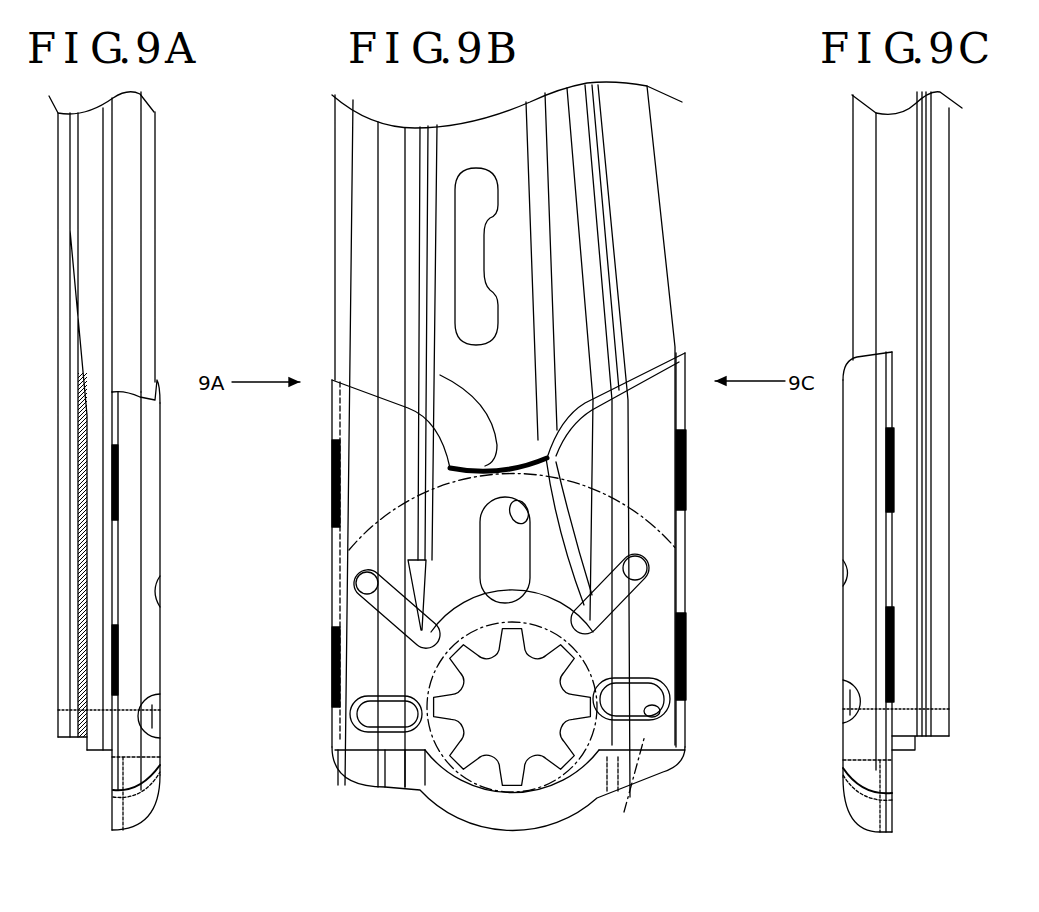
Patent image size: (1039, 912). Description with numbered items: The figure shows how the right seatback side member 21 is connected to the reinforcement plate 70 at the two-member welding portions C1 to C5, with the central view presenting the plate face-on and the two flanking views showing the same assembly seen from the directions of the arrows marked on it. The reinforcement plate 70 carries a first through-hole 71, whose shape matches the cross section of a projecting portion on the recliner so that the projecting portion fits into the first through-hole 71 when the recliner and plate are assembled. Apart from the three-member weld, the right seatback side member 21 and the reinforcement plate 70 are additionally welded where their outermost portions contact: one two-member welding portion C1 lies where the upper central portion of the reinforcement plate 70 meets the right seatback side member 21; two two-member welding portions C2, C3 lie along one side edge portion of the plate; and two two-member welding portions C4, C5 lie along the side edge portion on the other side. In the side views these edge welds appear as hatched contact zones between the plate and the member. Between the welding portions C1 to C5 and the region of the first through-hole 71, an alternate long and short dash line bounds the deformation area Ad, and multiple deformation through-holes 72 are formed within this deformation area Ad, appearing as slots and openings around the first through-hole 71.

In FIG. 9A, the right seatback side member 21 is at (148, 201).
In FIG. 9B, the right seatback side member 21 is at (665, 201).
In FIG. 9C, the right seatback side member 21 is at (945, 201).
In FIG. 9A, the reinforcement plate 70 is at (160, 557).
In FIG. 9B, the reinforcement plate 70 is at (668, 402).
In FIG. 9C, the reinforcement plate 70 is at (843, 542).
In FIG. 9B, the first through-hole 71 is at (462, 720).
In FIG. 9B, the deformation through-holes 72 is at (356, 585).
In FIG. 9B, the two-member welding portion C1 is at (440, 375).
In FIG. 9A, the two-member welding portion C2 is at (116, 484).
In FIG. 9B, the two-member welding portion C2 is at (332, 485).
In FIG. 9A, the two-member welding portion C3 is at (116, 658).
In FIG. 9B, the two-member welding portion C3 is at (332, 655).
In FIG. 9B, the two-member welding portion C4 is at (686, 471).
In FIG. 9C, the two-member welding portion C4 is at (886, 470).
In FIG. 9B, the two-member welding portion C5 is at (686, 656).
In FIG. 9C, the two-member welding portion C5 is at (892, 650).
In FIG. 9B, the deformation area Ad is at (631, 788).